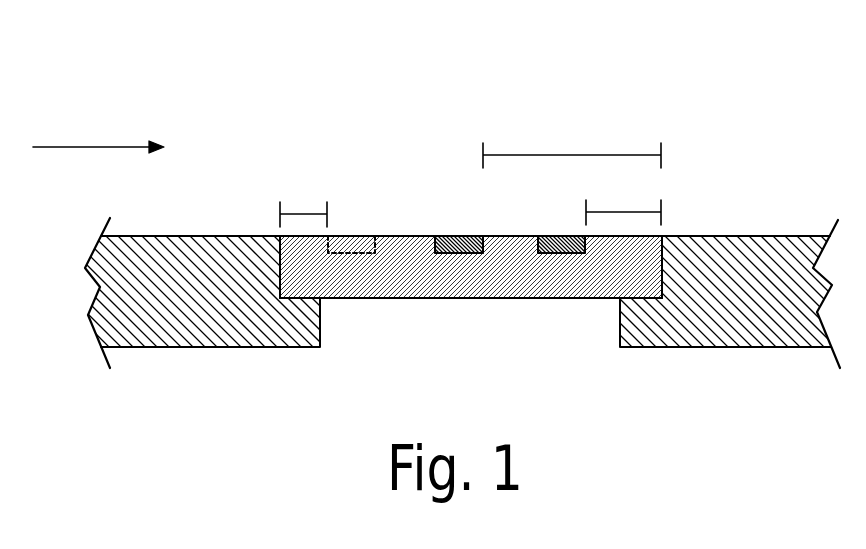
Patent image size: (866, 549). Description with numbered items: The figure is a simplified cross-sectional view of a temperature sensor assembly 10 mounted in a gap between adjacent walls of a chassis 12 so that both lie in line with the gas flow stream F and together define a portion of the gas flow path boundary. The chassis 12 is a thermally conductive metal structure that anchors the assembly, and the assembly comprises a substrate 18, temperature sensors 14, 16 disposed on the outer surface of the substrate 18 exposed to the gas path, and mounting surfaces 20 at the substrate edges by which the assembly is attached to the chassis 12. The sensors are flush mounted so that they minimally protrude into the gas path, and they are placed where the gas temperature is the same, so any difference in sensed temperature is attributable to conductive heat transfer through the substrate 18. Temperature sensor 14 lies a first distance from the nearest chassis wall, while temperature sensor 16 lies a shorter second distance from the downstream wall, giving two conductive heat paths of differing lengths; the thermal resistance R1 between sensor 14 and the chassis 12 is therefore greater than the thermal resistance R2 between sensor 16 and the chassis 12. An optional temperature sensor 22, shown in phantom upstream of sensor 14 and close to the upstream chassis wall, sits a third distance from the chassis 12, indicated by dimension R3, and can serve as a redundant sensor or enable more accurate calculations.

The temperature sensor assembly 10 is at (707, 105).
The chassis 12 is at (174, 307).
The temperature sensor 14 is at (455, 253).
The temperature sensor 16 is at (563, 253).
The substrate 18 is at (395, 282).
The mounting surface 20 is at (275, 270).
The temperature sensor 22 is at (350, 253).
The thermal resistance R1 is at (562, 155).
The thermal resistance R2 is at (619, 212).
The third distance R3 is at (300, 213).
The gas flow stream F is at (93, 147).